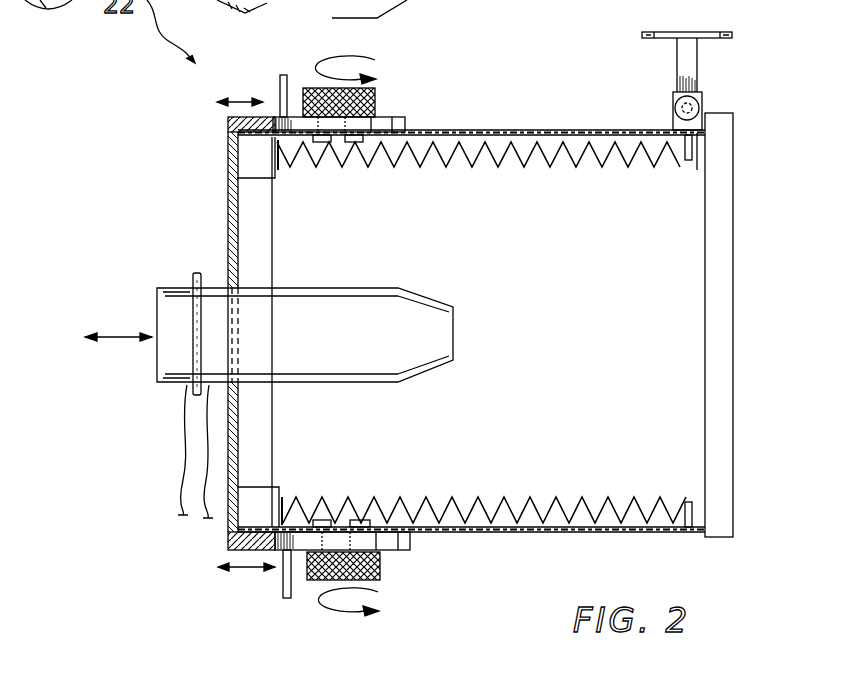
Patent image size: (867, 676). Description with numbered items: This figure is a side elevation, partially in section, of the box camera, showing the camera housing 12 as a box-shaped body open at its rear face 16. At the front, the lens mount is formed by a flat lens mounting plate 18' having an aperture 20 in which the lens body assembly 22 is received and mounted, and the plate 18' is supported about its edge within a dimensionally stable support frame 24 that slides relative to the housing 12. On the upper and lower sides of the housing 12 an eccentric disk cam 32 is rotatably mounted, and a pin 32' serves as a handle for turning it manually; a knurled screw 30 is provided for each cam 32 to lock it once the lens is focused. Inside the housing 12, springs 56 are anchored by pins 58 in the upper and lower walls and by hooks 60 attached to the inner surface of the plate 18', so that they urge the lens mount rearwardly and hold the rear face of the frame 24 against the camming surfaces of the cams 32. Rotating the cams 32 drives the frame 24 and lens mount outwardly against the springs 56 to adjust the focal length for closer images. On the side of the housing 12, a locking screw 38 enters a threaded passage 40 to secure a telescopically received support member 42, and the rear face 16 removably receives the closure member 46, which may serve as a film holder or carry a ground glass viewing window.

The camera housing 12 is at (472, 130).
The rear face 16 is at (705, 134).
The lens mounting plate 18' is at (210, 332).
The aperture 20 is at (236, 293).
The lens body assembly 22 is at (372, 288).
The support frame 24 is at (228, 147).
The knurled screw 30 is at (375, 100).
The eccentric disk cam 32 is at (365, 339).
The pin 32' is at (254, 331).
The locking screw 38 is at (703, 108).
The threaded passage 40 is at (673, 105).
The support member 42 is at (642, 36).
The closure member 46 is at (734, 313).
The spring 56 is at (471, 164).
The pin 58 is at (685, 162).
The hook 60 is at (262, 180).